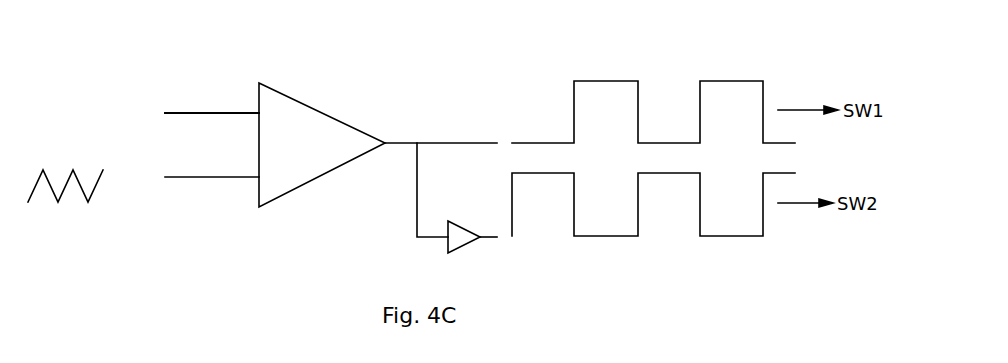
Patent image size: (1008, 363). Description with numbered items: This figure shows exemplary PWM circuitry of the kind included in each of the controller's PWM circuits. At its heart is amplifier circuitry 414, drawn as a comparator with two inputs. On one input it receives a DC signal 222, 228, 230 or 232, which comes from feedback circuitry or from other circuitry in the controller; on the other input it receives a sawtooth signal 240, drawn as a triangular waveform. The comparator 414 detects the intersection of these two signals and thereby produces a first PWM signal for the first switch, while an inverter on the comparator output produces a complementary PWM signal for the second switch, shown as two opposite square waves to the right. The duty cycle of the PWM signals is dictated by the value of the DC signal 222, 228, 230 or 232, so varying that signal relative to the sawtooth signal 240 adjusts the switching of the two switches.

The signal 222 is at (168, 98).
The signal 228 is at (192, 94).
The signal 230 is at (168, 129).
The signal 232 is at (192, 129).
The sawtooth signal 240 is at (143, 186).
The amplifier circuitry 414 is at (322, 145).